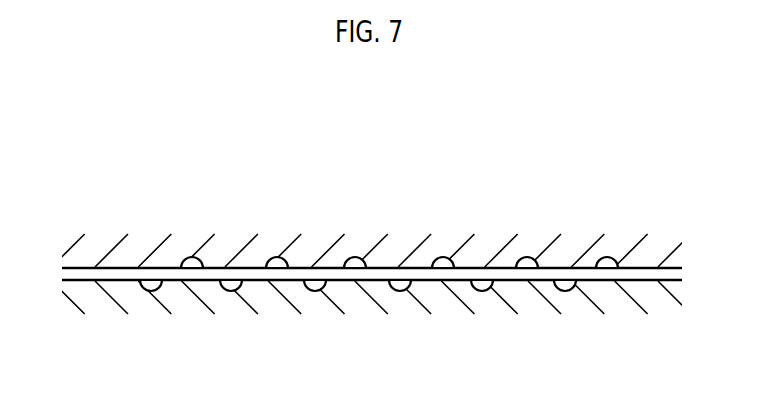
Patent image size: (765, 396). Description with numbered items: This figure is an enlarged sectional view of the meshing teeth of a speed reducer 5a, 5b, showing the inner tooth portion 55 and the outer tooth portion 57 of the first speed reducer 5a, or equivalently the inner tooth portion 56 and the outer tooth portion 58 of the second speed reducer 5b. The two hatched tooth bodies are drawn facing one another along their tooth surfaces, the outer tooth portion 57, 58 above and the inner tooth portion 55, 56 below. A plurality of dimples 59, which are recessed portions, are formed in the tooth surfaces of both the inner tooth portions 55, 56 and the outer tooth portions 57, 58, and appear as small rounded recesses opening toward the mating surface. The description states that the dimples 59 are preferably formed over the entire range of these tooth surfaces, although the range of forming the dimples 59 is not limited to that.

The first speed reducer 5a is at (371, 252).
The second speed reducer 5b is at (588, 206).
The first outer tooth portion 57 is at (371, 220).
The second outer tooth portion 58 is at (450, 247).
The first inner tooth portion 55 is at (371, 325).
The second inner tooth portion 56 is at (442, 300).
The dimples 59 is at (365, 262).